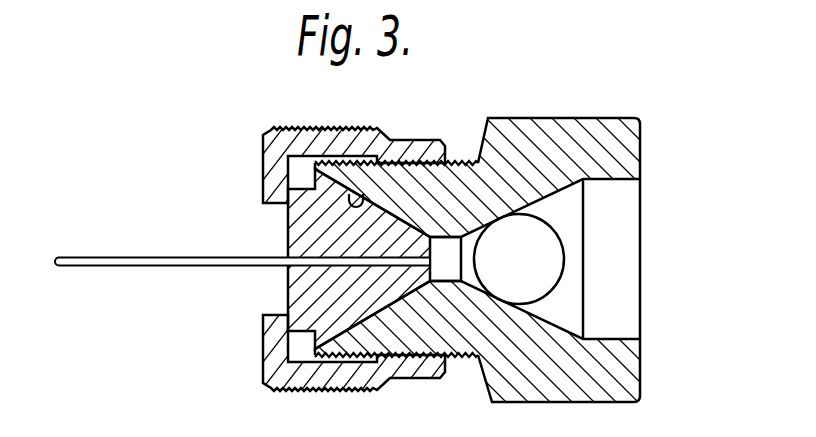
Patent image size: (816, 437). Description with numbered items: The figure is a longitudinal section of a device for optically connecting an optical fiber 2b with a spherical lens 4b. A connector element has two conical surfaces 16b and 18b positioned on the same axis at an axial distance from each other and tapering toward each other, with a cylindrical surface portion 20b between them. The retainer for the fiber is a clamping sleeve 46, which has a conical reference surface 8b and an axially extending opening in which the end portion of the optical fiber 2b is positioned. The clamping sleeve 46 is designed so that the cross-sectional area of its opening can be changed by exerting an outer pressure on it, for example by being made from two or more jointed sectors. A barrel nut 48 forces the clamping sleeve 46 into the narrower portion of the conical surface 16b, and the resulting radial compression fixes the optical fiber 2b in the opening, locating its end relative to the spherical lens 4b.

The optical fiber 2b is at (112, 262).
The spherical lens 4b is at (552, 246).
The conical reference surface 8b is at (401, 303).
The conical surface 16b is at (360, 200).
The conical surface 18b is at (560, 200).
The cylindrical surface portion 20b is at (440, 274).
The clamping sleeve 46 is at (292, 297).
The barrel nut 48 is at (278, 182).